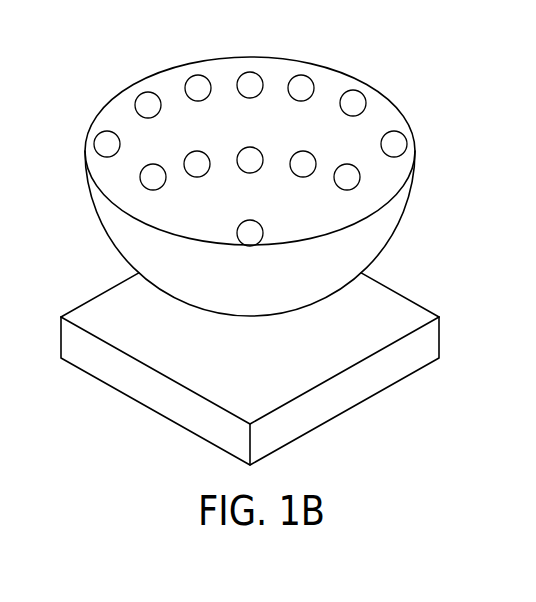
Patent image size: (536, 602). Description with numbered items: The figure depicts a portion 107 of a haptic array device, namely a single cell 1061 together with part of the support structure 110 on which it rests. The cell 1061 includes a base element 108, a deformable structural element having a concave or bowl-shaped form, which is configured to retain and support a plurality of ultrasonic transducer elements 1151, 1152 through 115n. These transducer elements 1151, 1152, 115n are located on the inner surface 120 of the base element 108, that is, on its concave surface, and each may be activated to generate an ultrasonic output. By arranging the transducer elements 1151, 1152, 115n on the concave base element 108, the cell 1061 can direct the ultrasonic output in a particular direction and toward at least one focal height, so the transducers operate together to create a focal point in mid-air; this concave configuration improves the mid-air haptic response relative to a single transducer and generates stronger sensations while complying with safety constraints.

The cell 1061 is at (172, 68).
The transducer element 1151 is at (252, 84).
The transducer element 1152 is at (349, 105).
The transducer element 115n is at (390, 144).
The portion 107 is at (80, 232).
The base element 108 is at (227, 298).
The support structure 110 is at (102, 307).
The inner surface 120 is at (396, 173).